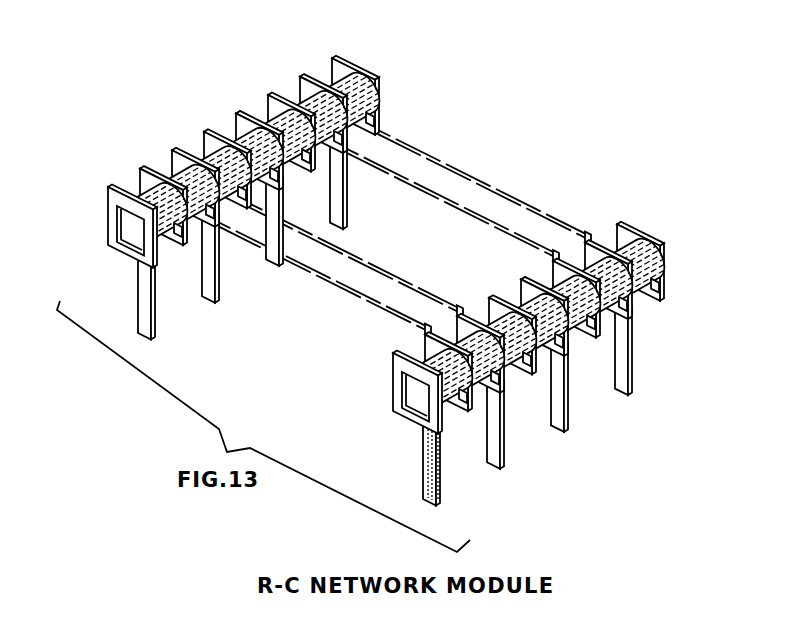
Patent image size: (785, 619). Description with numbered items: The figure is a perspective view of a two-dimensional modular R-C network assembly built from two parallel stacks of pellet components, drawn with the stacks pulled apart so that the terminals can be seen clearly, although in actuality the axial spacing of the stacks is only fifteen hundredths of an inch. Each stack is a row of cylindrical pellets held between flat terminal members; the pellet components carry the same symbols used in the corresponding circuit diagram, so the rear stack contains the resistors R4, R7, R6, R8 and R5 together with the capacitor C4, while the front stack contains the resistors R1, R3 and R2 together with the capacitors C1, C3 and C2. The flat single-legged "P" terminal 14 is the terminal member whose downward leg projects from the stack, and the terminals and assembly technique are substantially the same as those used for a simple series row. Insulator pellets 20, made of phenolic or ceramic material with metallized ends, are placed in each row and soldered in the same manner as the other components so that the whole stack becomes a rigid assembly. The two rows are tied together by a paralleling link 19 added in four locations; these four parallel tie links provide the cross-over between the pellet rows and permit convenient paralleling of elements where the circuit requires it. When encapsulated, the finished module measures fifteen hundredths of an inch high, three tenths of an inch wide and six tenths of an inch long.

The paralleling link 19 is at (583, 243).
The insulator pellet 20 is at (632, 435).
The "P" terminal 14 is at (450, 468).
The resistor R1 is at (423, 353).
The resistor R2 is at (610, 255).
The resistor R3 is at (507, 367).
The resistor R4 is at (137, 192).
The resistor R5 is at (328, 87).
The resistor R6 is at (263, 128).
The resistor R7 is at (187, 200).
The resistor R8 is at (297, 107).
The capacitor C1 is at (475, 372).
The capacitor C2 is at (613, 310).
The capacitor C3 is at (523, 302).
The capacitor C4 is at (235, 140).